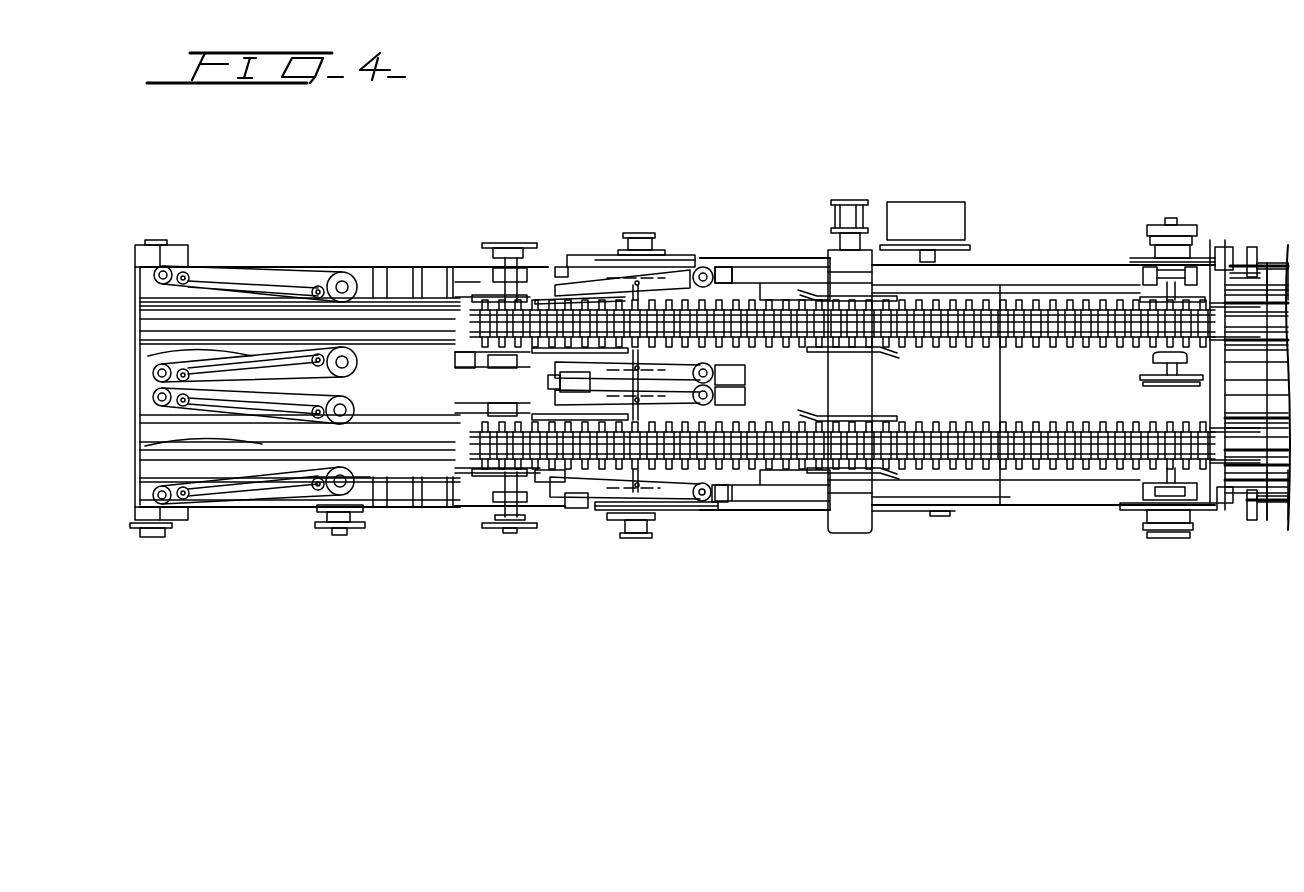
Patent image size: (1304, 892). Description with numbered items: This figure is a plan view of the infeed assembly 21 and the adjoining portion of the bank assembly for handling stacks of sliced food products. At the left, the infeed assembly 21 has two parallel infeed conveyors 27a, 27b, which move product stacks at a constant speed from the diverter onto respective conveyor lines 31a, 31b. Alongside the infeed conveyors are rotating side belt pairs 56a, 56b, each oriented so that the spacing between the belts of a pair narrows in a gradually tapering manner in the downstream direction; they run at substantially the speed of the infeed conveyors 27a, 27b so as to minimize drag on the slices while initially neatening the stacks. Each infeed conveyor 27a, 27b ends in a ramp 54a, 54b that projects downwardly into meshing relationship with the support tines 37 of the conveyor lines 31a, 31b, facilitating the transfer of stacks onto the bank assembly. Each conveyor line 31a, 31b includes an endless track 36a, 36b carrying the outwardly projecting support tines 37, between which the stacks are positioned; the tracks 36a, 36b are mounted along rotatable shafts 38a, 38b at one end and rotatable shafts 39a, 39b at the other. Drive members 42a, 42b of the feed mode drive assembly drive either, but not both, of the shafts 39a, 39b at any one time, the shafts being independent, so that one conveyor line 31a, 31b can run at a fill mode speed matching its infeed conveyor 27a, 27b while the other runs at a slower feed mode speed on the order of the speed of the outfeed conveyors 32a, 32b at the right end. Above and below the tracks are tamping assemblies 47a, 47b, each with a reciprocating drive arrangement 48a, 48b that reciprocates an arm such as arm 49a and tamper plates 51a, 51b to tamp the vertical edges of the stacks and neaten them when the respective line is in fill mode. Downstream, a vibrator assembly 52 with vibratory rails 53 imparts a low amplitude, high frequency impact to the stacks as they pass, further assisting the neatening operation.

The infeed assembly 21 is at (294, 244).
The infeed conveyor 27a is at (218, 447).
The infeed conveyor 27b is at (185, 292).
The conveyor line 31a is at (970, 447).
The conveyor line 31b is at (972, 323).
The outfeed conveyor 32a is at (1267, 443).
The outfeed conveyor 32b is at (1265, 297).
The endless track 36a is at (1070, 435).
The endless track 36b is at (1035, 313).
The support tines 37 is at (432, 333).
The rotatable shaft 38a is at (512, 477).
The rotatable shaft 38b is at (505, 293).
The rotatable shaft 39a is at (1160, 480).
The rotatable shaft 39b is at (1157, 288).
The drive member 42a is at (1180, 538).
The drive member 42b is at (1150, 228).
The tamping assembly 47a is at (675, 512).
The tamping assembly 47b is at (602, 255).
The reciprocating drive arrangement 48a is at (612, 518).
The reciprocating drive arrangement 48b is at (660, 250).
The arm 49a is at (682, 400).
The tamper plate 51a is at (548, 418).
The tamper plate 51b is at (562, 297).
The vibrator assembly 52 is at (866, 257).
The vibratory rails 53 is at (875, 296).
The ramp 54a is at (397, 467).
The ramp 54b is at (386, 300).
The side belt pair 56a is at (213, 408).
The side belt pair 56b is at (195, 290).